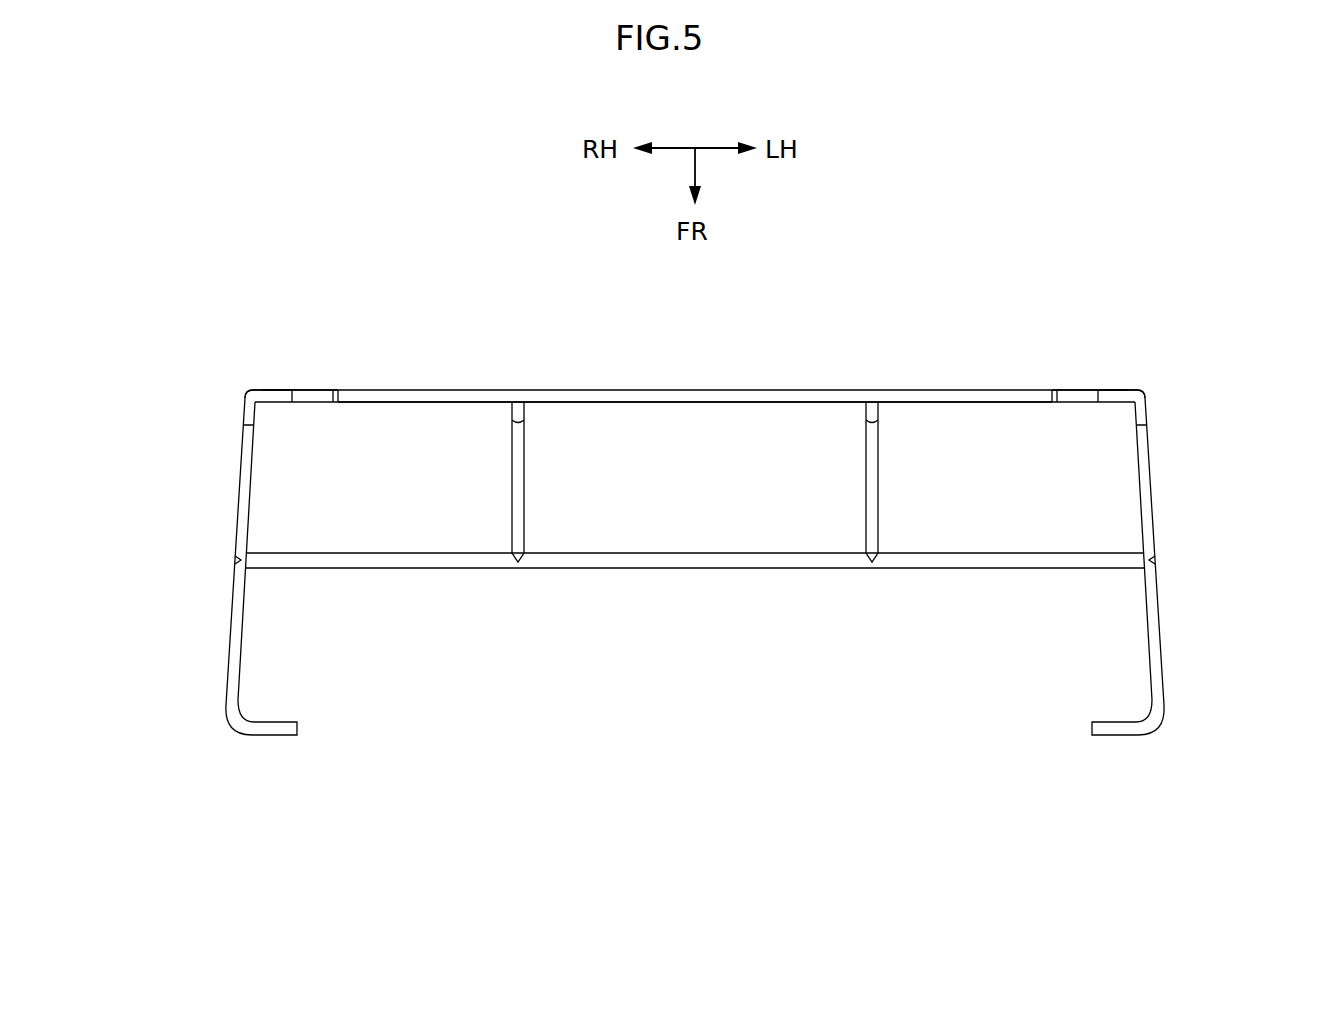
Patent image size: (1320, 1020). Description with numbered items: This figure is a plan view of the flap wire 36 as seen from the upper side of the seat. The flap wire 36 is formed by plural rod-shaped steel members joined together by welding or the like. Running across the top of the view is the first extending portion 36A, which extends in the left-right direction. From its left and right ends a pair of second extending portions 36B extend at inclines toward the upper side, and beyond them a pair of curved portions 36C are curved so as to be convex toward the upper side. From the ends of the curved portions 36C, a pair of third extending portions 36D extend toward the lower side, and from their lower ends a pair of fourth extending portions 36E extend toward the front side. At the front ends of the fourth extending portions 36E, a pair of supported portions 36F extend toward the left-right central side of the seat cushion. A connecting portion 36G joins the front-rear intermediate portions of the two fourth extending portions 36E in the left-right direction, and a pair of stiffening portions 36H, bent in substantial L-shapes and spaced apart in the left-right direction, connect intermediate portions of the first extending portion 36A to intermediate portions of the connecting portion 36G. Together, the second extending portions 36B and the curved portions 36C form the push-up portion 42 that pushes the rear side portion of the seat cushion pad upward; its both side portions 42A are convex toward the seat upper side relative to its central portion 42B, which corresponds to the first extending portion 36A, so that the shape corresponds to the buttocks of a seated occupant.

The flap wire 36 is at (455, 853).
The first extending portion 36A is at (738, 390).
The second extending portions 36B is at (315, 390).
The curved portions 36C is at (265, 390).
The third extending portions 36D is at (245, 392).
The fourth extending portions 36E is at (236, 532).
The supported portions 36F is at (283, 736).
The connecting portion 36G is at (698, 568).
The stiffening portions 36H is at (512, 485).
The push-up portion 42 is at (476, 390).
The both side portions 42A is at (280, 390).
The central portion 42B is at (620, 400).